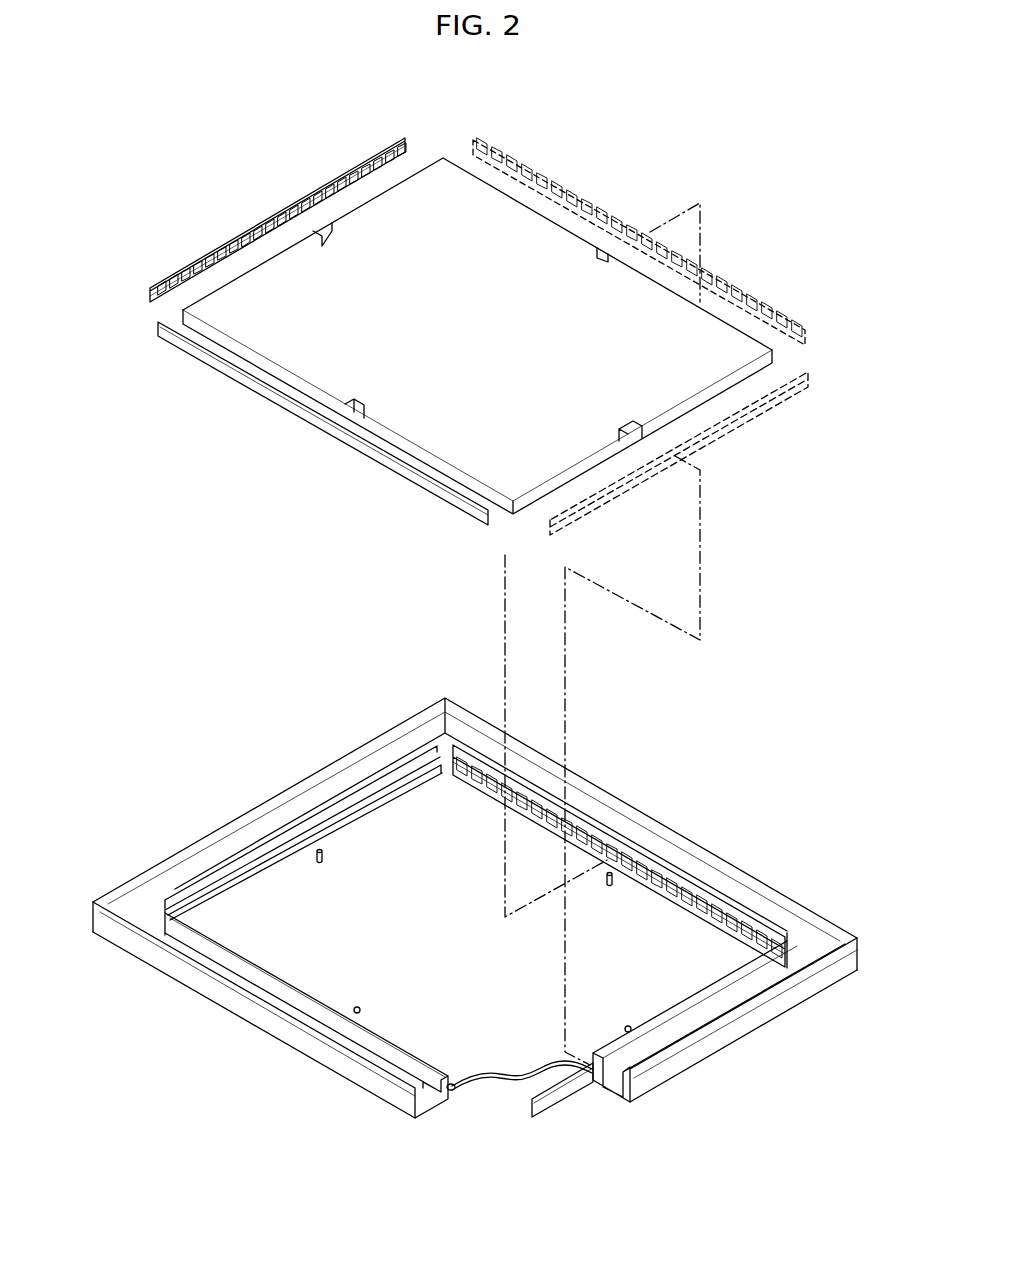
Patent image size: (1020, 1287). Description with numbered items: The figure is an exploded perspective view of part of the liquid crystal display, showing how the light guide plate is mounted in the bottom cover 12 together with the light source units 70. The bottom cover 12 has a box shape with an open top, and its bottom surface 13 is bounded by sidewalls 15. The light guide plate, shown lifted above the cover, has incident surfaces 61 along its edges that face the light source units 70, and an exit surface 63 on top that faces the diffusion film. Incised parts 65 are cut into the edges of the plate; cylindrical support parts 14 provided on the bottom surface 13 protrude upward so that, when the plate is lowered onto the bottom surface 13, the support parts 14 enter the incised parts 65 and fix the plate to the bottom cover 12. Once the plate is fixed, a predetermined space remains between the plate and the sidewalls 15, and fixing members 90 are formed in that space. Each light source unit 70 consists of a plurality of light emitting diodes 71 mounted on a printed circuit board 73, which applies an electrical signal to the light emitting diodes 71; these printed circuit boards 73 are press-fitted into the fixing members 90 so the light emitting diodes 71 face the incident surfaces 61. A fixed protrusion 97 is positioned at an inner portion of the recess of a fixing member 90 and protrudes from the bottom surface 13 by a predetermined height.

The bottom cover 12 is at (747, 875).
The bottom surface 13 is at (487, 1047).
The cylindrical support parts 14 is at (324, 857).
The sidewalls 15 is at (742, 1022).
The incident surfaces 61 is at (382, 430).
The exit surface 63 is at (487, 217).
The incised parts 65 is at (332, 240).
The light source units 70 is at (475, 643).
The light emitting diodes 71 is at (340, 183).
The printed circuit board 73 is at (378, 155).
The fixing members 90 is at (272, 845).
The fixed protrusion 97 is at (455, 1090).